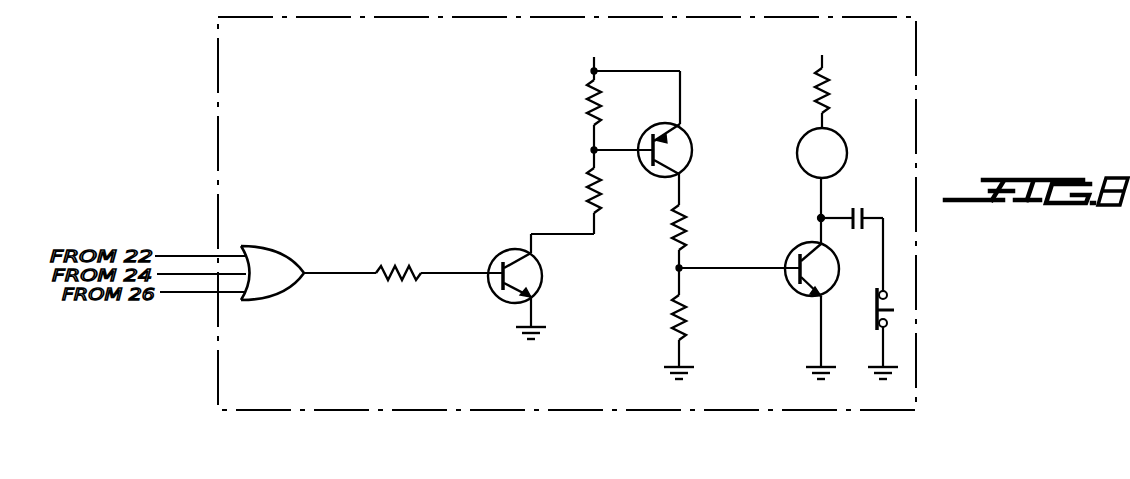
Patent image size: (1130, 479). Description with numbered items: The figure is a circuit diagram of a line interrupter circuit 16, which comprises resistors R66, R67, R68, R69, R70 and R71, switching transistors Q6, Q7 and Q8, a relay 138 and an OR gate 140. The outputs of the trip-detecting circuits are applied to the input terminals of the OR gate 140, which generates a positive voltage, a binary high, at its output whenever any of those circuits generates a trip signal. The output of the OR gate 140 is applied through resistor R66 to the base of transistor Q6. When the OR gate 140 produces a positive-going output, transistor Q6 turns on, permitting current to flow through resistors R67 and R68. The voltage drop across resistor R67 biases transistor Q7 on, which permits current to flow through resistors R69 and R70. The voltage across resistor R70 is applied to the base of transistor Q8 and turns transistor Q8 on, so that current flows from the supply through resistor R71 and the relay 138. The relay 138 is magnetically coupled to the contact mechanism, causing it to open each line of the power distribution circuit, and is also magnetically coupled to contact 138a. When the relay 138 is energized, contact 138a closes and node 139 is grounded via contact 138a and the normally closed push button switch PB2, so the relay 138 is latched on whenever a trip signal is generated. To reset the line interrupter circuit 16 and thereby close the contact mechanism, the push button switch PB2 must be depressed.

The line interrupter circuit 16 is at (916, 63).
The OR gate 140 is at (268, 300).
The resistor R66 is at (430, 263).
The switching transistor Q6 is at (544, 284).
The resistor R67 is at (581, 108).
The resistor R68 is at (586, 191).
The switching transistor Q7 is at (693, 153).
The resistor R69 is at (684, 250).
The resistor R70 is at (686, 322).
The switching transistor Q8 is at (791, 280).
The node 139 is at (818, 219).
The relay 138 is at (845, 150).
The resistor R71 is at (827, 95).
The contact 138a is at (870, 201).
The push button switch PB2 is at (865, 333).